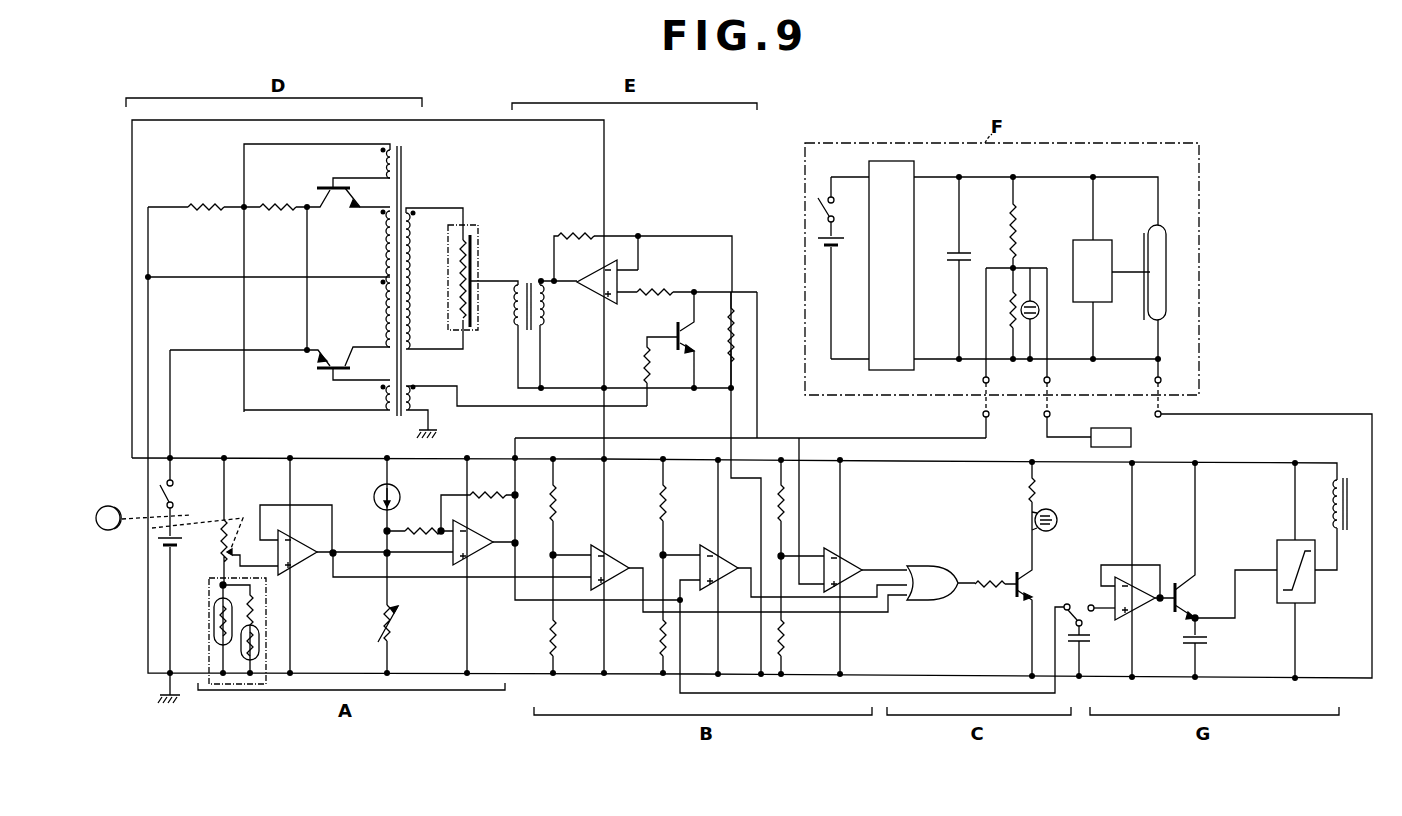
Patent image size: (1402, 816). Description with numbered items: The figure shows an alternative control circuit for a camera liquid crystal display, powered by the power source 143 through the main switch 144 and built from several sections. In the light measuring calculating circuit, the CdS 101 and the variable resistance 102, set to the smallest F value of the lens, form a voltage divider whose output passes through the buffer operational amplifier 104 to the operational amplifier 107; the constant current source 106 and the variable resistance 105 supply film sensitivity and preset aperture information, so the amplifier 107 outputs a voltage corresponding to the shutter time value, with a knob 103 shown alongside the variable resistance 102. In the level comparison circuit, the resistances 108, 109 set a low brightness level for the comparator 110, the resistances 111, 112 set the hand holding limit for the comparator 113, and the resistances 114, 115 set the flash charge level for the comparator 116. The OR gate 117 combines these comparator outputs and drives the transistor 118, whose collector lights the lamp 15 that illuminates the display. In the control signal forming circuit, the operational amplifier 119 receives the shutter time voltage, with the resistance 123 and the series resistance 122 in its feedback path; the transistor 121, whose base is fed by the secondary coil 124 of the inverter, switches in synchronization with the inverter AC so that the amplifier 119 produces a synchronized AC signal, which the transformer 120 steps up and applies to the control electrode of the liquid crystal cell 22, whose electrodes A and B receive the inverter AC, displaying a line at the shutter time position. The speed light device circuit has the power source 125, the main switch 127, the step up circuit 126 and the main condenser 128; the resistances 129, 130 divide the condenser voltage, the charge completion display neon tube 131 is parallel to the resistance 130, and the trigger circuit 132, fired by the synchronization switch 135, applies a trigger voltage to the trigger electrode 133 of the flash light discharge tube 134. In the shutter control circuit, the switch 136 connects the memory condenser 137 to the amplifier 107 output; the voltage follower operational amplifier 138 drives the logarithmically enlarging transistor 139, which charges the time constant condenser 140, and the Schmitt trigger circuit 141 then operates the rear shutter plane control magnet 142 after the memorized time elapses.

The liquid crystal cell 22 is at (478, 225).
The secondary coil 124 is at (408, 388).
The transformer 120 is at (516, 318).
The operational amplifier 119 is at (593, 297).
The resistance 123 is at (575, 236).
The transistor 121 is at (664, 344).
The resistance 122 is at (729, 335).
The step up circuit 126 is at (891, 265).
The main switch 127 is at (836, 207).
The power source 125 is at (837, 256).
The main condenser 128 is at (955, 262).
The resistance 129 is at (1016, 228).
The resistance 130 is at (1012, 313).
The charge completion display neon tube 131 is at (1032, 298).
The trigger circuit 132 is at (1085, 302).
The trigger electrode 133 is at (1125, 274).
The flash light discharge tube 134 is at (1155, 315).
The synchronization switch 135 is at (1131, 437).
The adjusting knob 103 is at (108, 505).
The main switch 144 is at (174, 496).
The power source 143 is at (178, 556).
The variable resistance 102 is at (219, 543).
The CdS 101 is at (210, 630).
The operational amplifier 104 is at (305, 568).
The constant current source 106 is at (379, 503).
The variable resistance 105 is at (378, 622).
The operational amplifier 107 is at (490, 545).
The resistance 108 is at (560, 505).
The resistance 109 is at (560, 642).
The comparator 110 is at (622, 562).
The resistance 111 is at (670, 505).
The resistance 112 is at (656, 645).
The comparator 113 is at (720, 560).
The resistance 114 is at (788, 505).
The resistance 115 is at (788, 642).
The comparator 116 is at (848, 562).
The OR gate 117 is at (928, 603).
The transistor 118 is at (1010, 598).
The lamp 15 is at (1057, 520).
The switch 136 is at (1070, 602).
The memory condenser 137 is at (1090, 640).
The operational amplifier 138 is at (1135, 608).
The logarithmically enlarging transistor 139 is at (1180, 580).
The time constant condenser 140 is at (1207, 640).
The Schmitt trigger circuit 141 is at (1283, 603).
The rear shutter plane control magnet 142 is at (1339, 535).